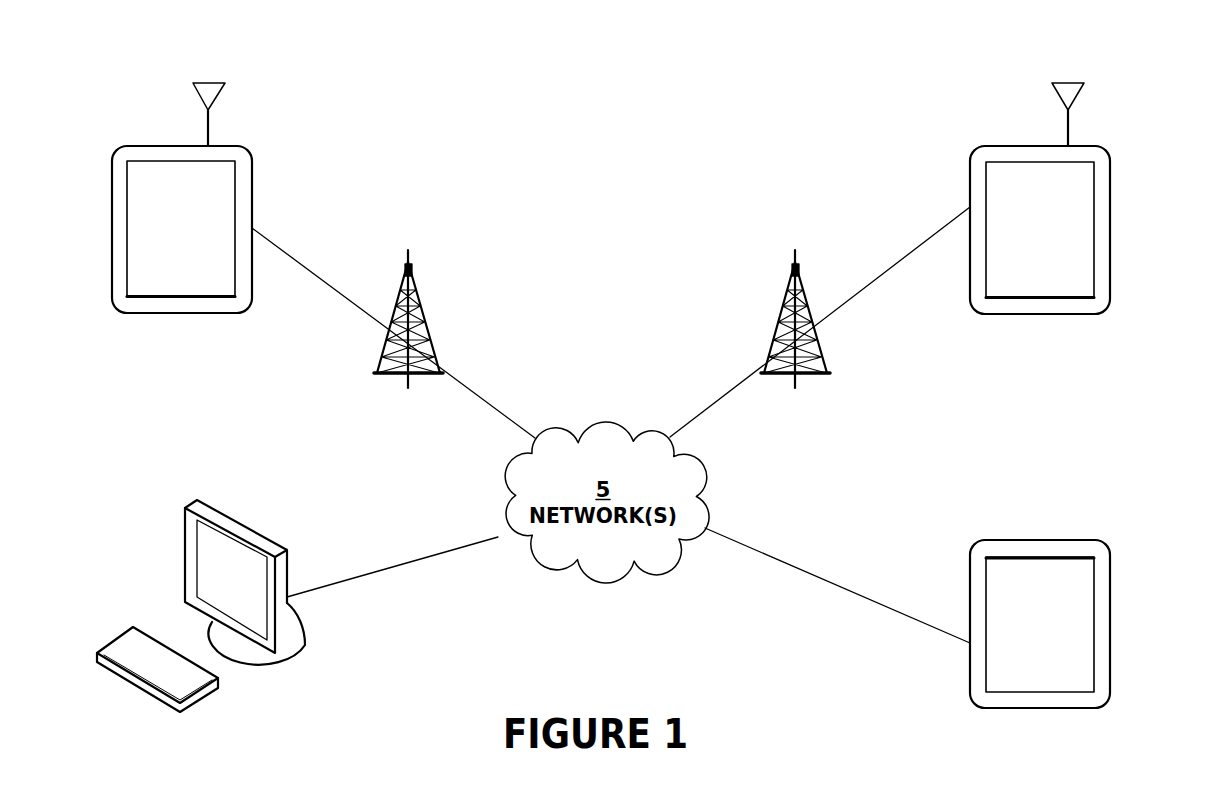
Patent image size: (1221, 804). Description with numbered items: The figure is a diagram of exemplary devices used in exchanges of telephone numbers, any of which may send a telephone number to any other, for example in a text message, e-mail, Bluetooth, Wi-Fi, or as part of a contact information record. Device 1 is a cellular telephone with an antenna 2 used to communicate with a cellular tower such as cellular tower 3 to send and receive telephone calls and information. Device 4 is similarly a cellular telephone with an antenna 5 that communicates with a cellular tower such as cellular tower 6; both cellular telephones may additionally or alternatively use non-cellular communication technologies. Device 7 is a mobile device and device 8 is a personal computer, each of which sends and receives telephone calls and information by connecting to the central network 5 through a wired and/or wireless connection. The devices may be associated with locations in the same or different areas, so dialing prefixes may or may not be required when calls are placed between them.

The device 1 is at (252, 177).
The antenna 2 is at (219, 97).
The cellular tower 3 is at (415, 290).
The device 4 is at (1110, 178).
The antenna 5 is at (1075, 97).
The cellular tower 6 is at (792, 292).
The device 7 is at (1017, 540).
The device 8 is at (266, 527).